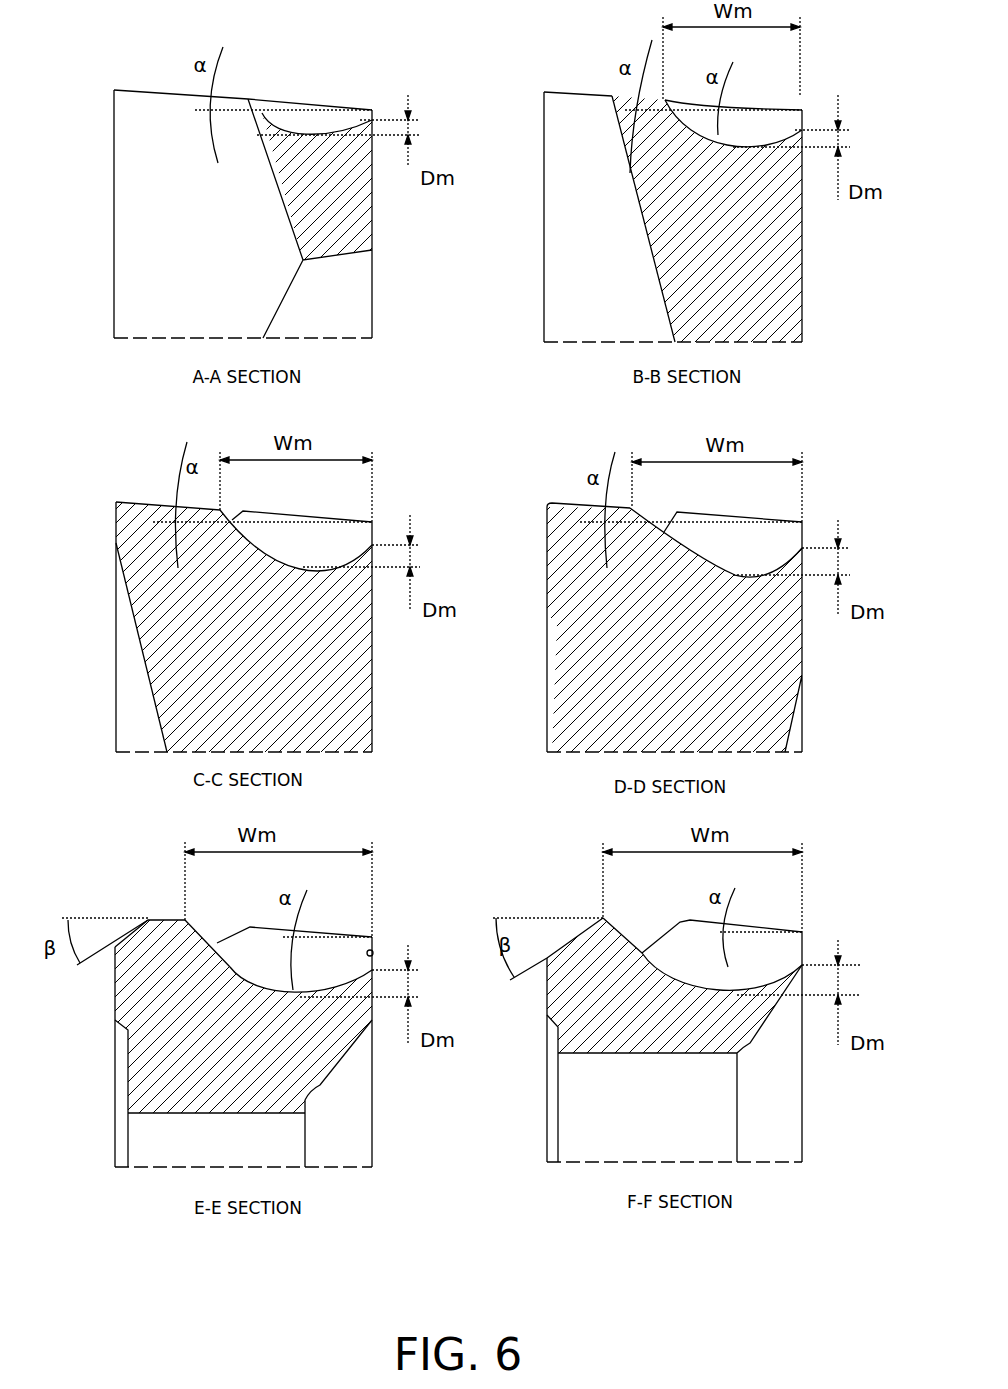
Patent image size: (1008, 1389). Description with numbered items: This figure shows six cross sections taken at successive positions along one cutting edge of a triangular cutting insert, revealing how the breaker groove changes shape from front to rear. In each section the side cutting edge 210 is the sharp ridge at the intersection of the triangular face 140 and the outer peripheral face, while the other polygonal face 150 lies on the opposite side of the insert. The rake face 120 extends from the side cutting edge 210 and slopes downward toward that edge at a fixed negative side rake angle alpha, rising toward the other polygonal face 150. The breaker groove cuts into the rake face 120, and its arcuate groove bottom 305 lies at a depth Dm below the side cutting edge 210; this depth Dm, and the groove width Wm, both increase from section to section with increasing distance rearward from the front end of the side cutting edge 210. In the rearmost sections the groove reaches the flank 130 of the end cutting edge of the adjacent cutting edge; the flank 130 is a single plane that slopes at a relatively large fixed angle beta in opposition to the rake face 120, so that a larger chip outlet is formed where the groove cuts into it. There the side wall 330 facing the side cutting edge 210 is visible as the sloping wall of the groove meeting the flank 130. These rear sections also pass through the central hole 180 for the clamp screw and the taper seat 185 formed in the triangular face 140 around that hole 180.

The rake face 120 is at (178, 90).
The groove bottom 305 is at (320, 130).
The side cutting edge 210 is at (372, 110).
The triangular face 140 is at (372, 265).
The other polygonal face 150 is at (114, 305).
The flank 130 is at (130, 935).
The side wall 330 is at (213, 943).
The taper seat 185 is at (340, 1063).
The hole 180 is at (143, 1115).